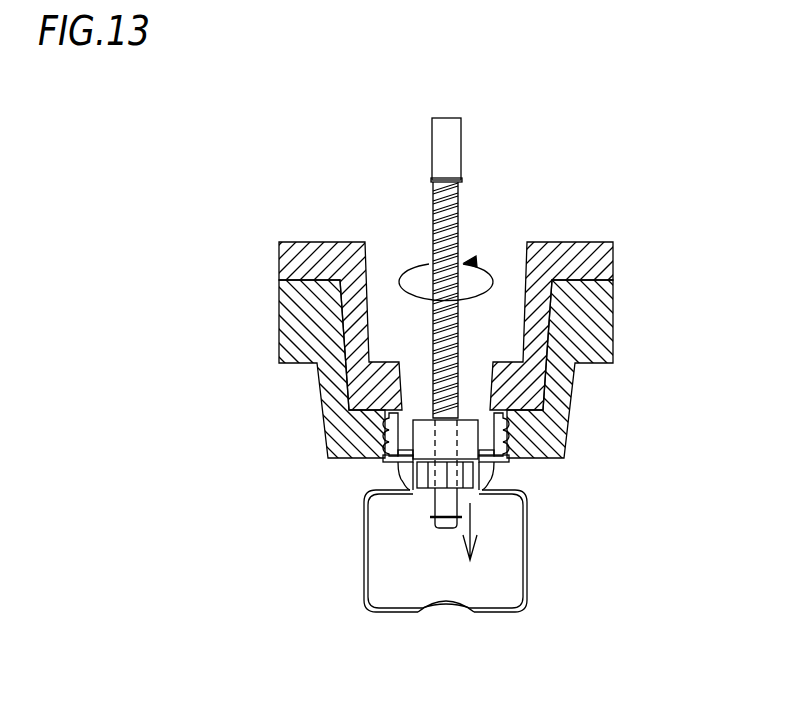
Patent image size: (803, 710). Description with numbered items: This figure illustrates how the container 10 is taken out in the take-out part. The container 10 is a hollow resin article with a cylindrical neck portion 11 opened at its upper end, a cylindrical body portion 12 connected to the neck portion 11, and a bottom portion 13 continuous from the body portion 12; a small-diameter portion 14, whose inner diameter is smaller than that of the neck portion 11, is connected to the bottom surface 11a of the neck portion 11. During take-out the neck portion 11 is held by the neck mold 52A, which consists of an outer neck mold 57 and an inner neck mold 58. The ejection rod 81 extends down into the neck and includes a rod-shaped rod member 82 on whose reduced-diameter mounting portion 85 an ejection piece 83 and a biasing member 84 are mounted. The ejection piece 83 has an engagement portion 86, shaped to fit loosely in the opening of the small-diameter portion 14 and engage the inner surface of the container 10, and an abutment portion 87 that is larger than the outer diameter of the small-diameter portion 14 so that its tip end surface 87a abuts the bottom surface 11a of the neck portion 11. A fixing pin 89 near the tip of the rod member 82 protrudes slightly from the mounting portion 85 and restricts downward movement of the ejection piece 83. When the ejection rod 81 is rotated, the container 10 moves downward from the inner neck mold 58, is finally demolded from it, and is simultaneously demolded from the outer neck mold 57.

The container 10 is at (469, 547).
The neck portion 11 is at (396, 428).
The bottom surface 11a is at (505, 460).
The body portion 12 is at (527, 578).
The bottom portion 13 is at (395, 613).
The small-diameter portion 14 is at (484, 478).
The neck mold 52A is at (424, 350).
The outer neck mold 57 is at (545, 412).
The inner neck mold 58 is at (575, 375).
The ejection rod 81 is at (473, 242).
The rod member 82 is at (443, 148).
The ejection piece 83 is at (376, 499).
The biasing member 84 is at (437, 210).
The mounting portion 85 is at (448, 215).
The engagement portion 86 is at (400, 488).
The abutment portion 87 is at (396, 470).
The tip end surface 87a is at (446, 453).
The fixing pin 89 is at (430, 516).